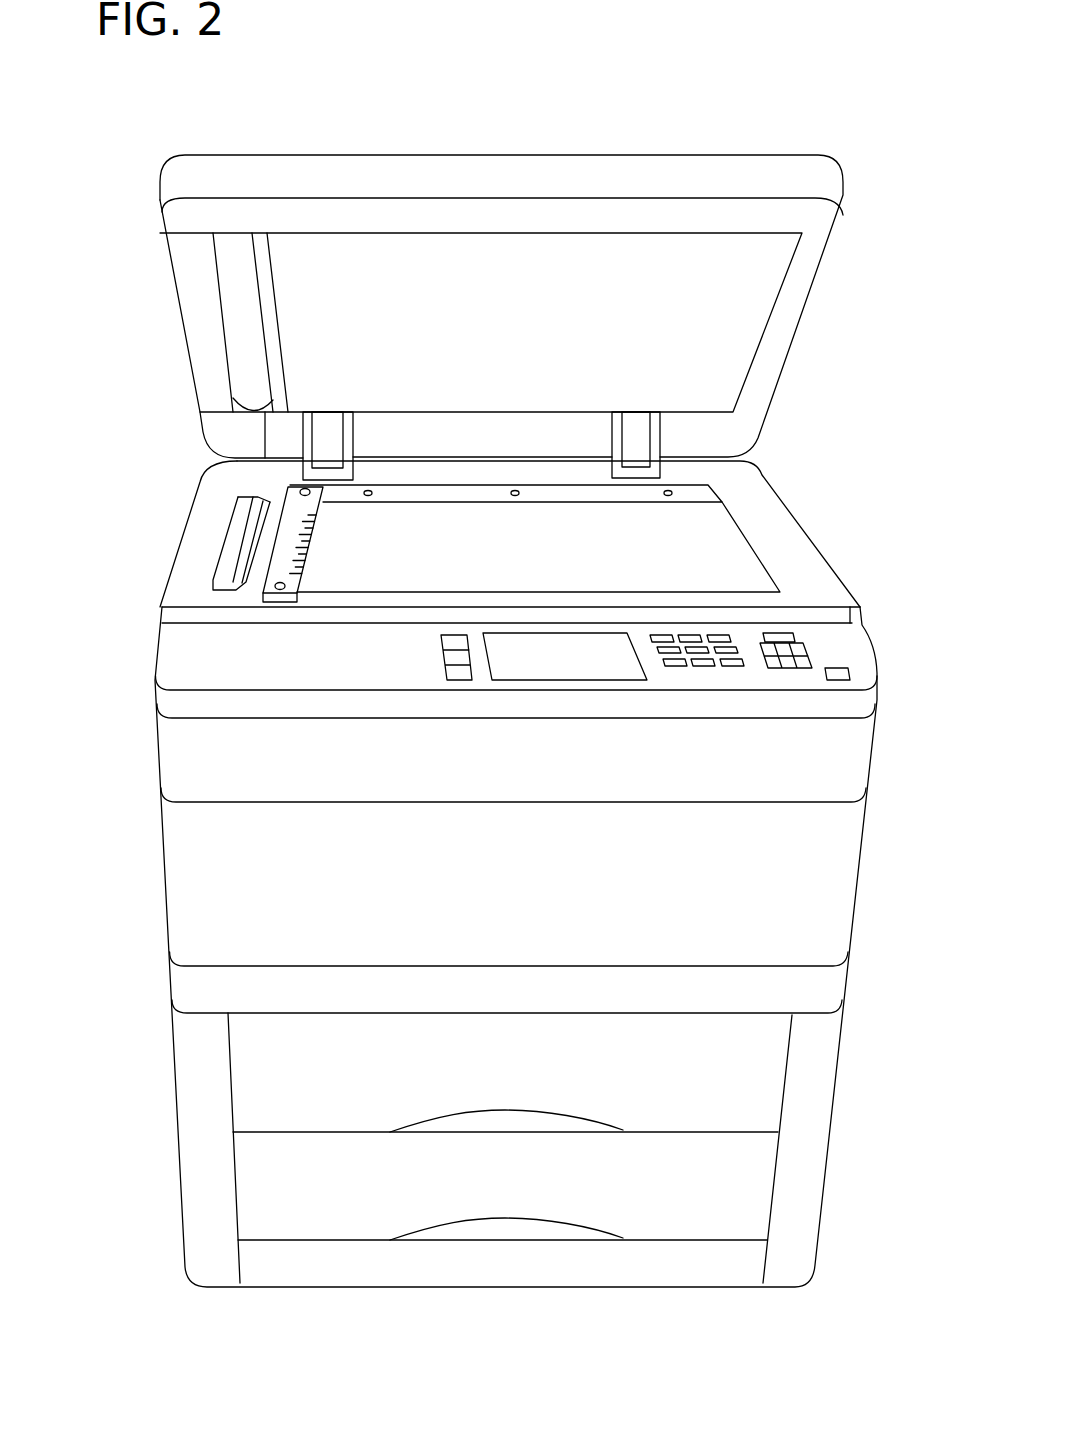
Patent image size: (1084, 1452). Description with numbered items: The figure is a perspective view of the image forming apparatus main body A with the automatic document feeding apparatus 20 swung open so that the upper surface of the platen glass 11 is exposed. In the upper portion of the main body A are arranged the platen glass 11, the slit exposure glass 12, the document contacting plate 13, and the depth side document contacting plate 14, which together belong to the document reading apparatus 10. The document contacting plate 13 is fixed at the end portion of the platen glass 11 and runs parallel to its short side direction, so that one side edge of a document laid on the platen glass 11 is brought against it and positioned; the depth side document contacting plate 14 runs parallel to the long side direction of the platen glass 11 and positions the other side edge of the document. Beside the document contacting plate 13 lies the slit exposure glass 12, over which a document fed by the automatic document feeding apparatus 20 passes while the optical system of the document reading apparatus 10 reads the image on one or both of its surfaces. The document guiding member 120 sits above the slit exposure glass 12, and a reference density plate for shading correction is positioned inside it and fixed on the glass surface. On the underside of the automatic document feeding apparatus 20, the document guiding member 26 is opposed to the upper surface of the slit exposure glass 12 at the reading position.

The document reading apparatus 10 is at (797, 562).
The platen glass 11 is at (717, 527).
The slit exposure glass 12 is at (273, 515).
The document guiding member 120 is at (253, 494).
The document contacting plate 13 is at (283, 543).
The depth side document contacting plate 14 is at (432, 497).
The automatic document feeding apparatus 20 is at (483, 274).
The document guiding member 26 is at (238, 312).
The image forming apparatus main body A is at (883, 635).